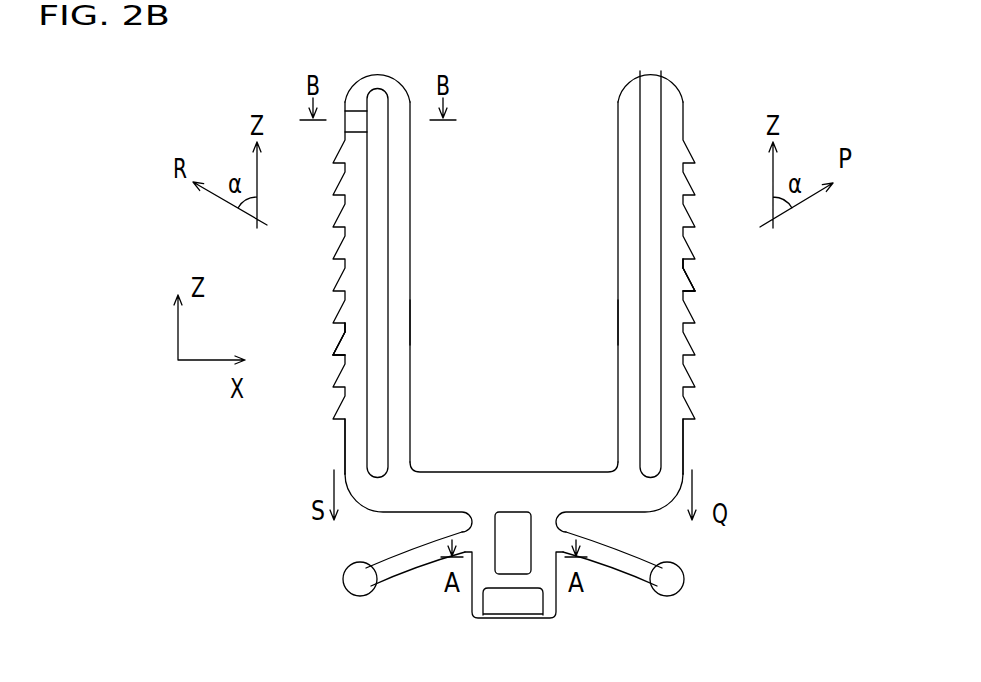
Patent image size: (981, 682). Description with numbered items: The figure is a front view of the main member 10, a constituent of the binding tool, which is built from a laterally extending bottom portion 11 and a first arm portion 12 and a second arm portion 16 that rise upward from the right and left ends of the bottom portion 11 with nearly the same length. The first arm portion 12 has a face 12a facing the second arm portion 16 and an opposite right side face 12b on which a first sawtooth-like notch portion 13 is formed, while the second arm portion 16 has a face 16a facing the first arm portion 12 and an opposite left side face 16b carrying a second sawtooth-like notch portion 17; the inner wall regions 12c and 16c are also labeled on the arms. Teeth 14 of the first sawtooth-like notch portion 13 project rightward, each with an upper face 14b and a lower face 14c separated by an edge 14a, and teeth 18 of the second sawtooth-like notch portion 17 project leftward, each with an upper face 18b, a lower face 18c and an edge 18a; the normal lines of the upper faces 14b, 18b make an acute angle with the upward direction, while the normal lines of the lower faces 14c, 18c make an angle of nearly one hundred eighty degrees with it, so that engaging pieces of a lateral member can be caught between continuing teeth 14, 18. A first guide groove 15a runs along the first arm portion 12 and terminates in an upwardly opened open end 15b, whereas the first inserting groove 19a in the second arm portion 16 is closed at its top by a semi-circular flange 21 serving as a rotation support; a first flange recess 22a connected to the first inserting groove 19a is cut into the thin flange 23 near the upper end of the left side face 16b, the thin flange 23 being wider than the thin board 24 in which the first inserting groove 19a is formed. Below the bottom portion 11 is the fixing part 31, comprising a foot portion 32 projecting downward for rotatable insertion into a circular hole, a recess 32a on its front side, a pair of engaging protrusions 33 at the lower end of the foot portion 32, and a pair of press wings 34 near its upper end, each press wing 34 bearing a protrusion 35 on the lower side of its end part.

The main member 10 is at (745, 64).
The bottom portion 11 is at (447, 480).
The first arm portion 12 is at (689, 249).
The face of first arm portion 12a is at (618, 236).
The right side face of first arm portion 12b is at (684, 440).
The inner wall of right arm 12c is at (624, 320).
The first sawtooth-like notch portion 13 is at (701, 186).
The tooth 14 is at (765, 267).
The edge 14a is at (692, 262).
The upper face 14b is at (696, 247).
The lower face 14c is at (693, 280).
The first guide groove 15a is at (652, 147).
The open end 15b is at (648, 74).
The second arm portion 16 is at (368, 248).
The face of second arm portion 16a is at (411, 260).
The left side face of second arm portion 16b is at (345, 437).
The inner wall of left arm 16c is at (399, 320).
The second sawtooth-like notch portion 17 is at (322, 196).
The tooth 18 is at (283, 277).
The edge 18a is at (336, 289).
The upper face 18b is at (340, 243).
The lower face 18c is at (335, 294).
The first inserting groove 19a is at (441, 283).
The semi-circular flange 21 is at (384, 77).
The first flange recess 22a is at (329, 75).
The thin flange 23 is at (345, 118).
The thin board 24 is at (377, 168).
The fixing part 31 is at (520, 575).
The foot portion 32 is at (562, 594).
The recess 32a is at (510, 528).
The engaging protrusion 33 is at (510, 603).
The press wing 34 is at (388, 562).
The protrusion 35 is at (362, 596).